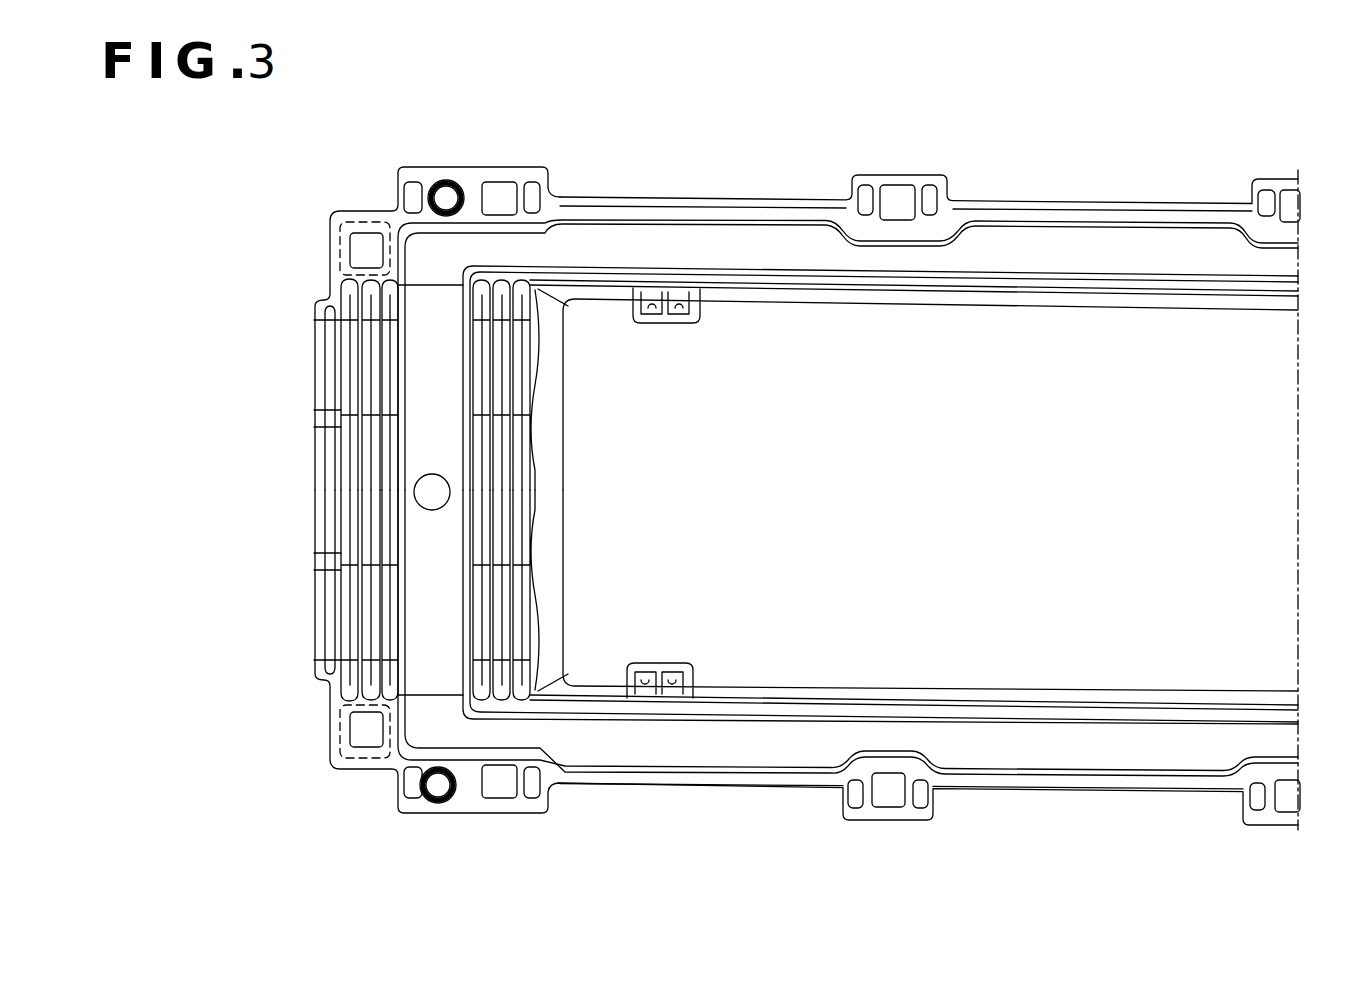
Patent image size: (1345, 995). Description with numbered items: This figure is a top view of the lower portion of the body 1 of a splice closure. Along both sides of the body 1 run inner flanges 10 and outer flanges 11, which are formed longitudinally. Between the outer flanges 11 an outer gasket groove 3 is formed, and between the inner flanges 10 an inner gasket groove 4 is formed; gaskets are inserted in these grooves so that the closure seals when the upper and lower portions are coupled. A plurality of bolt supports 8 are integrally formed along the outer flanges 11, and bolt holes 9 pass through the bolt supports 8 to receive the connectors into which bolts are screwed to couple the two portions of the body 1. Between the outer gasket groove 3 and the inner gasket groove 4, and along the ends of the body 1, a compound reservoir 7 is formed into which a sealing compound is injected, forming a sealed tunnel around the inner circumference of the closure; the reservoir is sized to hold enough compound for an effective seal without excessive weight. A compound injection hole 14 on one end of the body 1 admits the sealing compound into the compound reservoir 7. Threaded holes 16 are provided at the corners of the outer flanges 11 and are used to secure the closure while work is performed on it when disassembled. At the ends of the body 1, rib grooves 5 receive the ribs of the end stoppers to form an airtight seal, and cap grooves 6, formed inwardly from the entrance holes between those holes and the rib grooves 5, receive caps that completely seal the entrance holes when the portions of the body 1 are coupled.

The body 1 is at (630, 160).
The outer gasket groove 3 is at (684, 212).
The inner gasket groove 4 is at (985, 282).
The rib grooves 5 is at (365, 672).
The cap grooves 6 is at (328, 333).
The compound reservoir 7 is at (700, 748).
The bolt supports 8 is at (465, 178).
The bolt holes 9 is at (508, 194).
The inner flanges 10 is at (680, 303).
The outer flanges 11 is at (766, 793).
The compound injection hole 14 is at (424, 486).
The threaded holes 16 is at (442, 188).